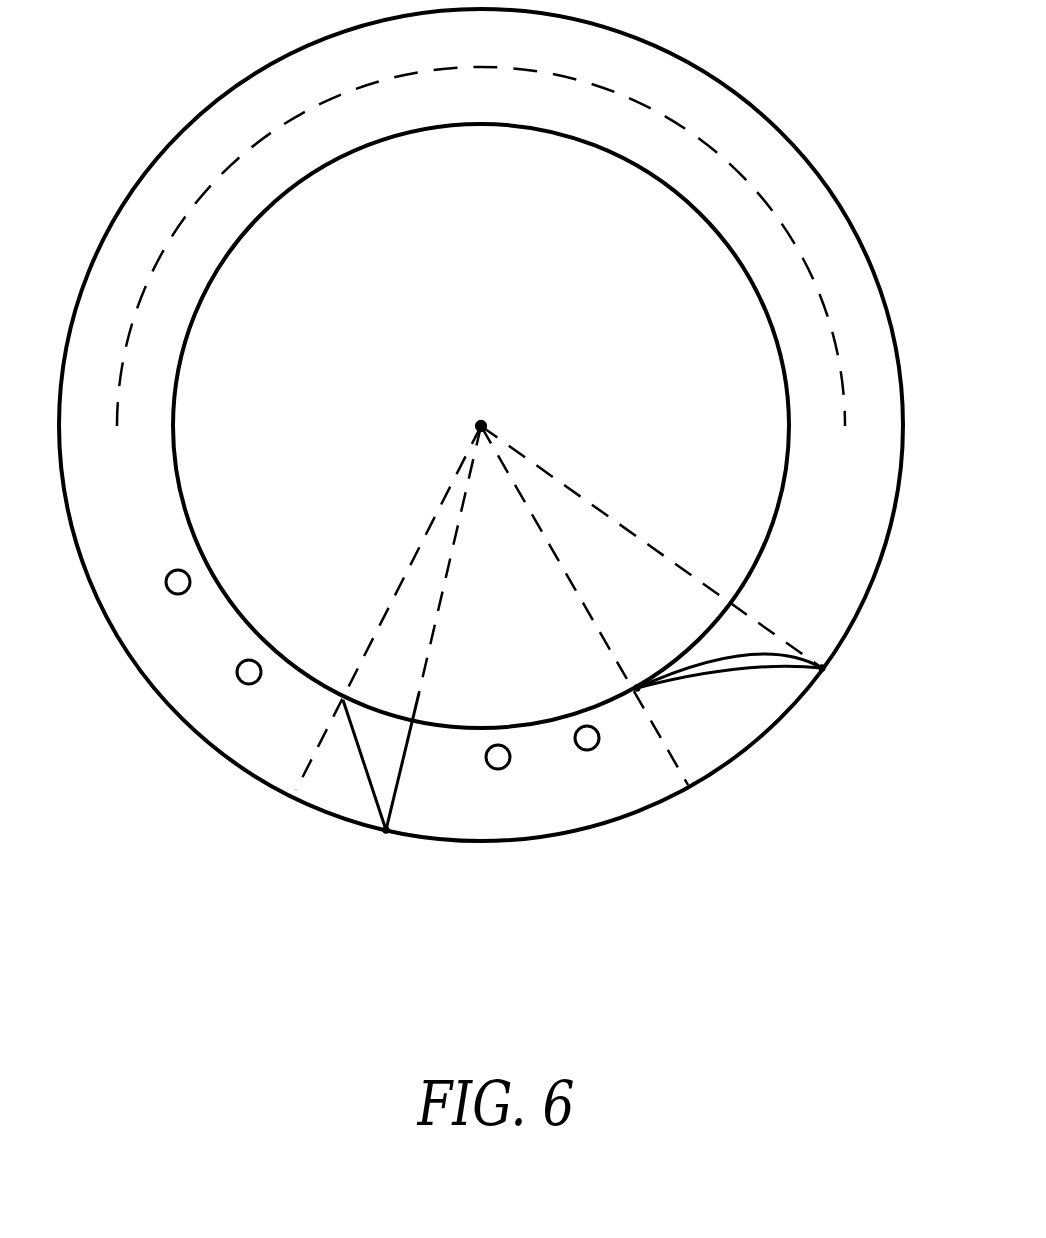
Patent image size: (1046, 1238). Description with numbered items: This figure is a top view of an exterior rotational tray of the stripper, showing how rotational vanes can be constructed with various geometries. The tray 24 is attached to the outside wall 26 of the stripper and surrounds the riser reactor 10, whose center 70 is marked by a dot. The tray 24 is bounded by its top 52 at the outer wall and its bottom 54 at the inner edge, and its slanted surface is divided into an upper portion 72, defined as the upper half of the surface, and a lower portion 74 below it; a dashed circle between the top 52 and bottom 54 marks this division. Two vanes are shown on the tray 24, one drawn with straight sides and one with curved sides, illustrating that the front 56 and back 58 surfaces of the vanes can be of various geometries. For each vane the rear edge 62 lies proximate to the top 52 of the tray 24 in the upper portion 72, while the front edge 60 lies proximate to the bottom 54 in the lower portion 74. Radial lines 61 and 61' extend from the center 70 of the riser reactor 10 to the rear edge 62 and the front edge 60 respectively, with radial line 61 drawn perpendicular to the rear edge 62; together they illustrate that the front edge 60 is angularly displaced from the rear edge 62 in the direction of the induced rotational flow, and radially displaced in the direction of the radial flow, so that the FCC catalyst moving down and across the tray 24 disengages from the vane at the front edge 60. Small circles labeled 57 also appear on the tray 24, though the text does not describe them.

The riser reactor 10 is at (481, 218).
The tray 24 is at (821, 543).
The outside wall 26 is at (863, 242).
The top of the tray 52 is at (149, 688).
The bottom of the tray 54 is at (231, 600).
The front surface 56 is at (366, 776).
The hole 57 is at (188, 590).
The back surface 58 is at (400, 773).
The front edge 60 is at (643, 690).
The radial line 61 is at (620, 559).
The radial line 61' is at (492, 608).
The rear edge 62 is at (386, 830).
The center 70 is at (484, 419).
The upper portion 72 is at (853, 363).
The lower portion 74 is at (798, 413).